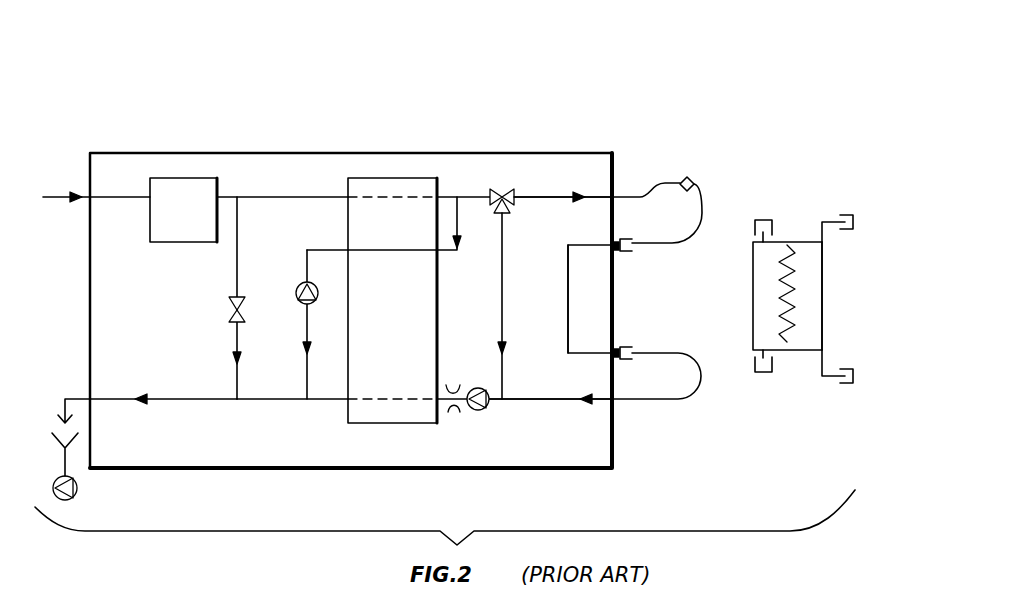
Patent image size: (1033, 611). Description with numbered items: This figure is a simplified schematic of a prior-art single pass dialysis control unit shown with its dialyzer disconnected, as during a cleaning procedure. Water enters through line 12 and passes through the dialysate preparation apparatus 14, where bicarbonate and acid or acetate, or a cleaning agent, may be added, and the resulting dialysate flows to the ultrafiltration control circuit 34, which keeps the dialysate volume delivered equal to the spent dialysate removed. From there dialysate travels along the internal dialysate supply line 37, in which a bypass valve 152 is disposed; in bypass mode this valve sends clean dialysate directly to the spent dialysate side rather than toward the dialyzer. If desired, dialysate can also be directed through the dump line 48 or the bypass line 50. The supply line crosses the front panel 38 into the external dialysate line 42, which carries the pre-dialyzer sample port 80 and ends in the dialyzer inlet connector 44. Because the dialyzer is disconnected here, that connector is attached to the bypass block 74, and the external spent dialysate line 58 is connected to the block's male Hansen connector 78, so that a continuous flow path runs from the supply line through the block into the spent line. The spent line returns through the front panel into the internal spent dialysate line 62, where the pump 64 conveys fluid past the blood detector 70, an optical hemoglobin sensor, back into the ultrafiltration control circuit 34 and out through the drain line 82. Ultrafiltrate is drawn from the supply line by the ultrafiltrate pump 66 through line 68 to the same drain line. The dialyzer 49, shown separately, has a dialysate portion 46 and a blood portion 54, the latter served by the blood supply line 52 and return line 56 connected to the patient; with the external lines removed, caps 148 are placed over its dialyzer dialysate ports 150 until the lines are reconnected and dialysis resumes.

The line 12 is at (114, 197).
The dialysate preparation apparatus 14 is at (155, 242).
The ultrafiltration control circuit 34 is at (410, 310).
The internal dialysate supply line 37 is at (540, 197).
The front panel 38 is at (612, 300).
The external dialysate line 42 is at (655, 181).
The dialyzer inlet connector 44 is at (638, 239).
The dialysate portion 46 is at (753, 287).
The dump line 48 is at (237, 278).
The dialyzer 49 is at (838, 310).
The bypass line 50 is at (502, 303).
The blood supply line 52 is at (830, 222).
The blood portion 54 is at (822, 290).
The return line 56 is at (830, 376).
The external spent dialysate line 58 is at (701, 380).
The internal spent dialysate line 62 is at (530, 399).
The pump 64 is at (484, 410).
The ultrafiltrate pump 66 is at (301, 304).
The line 68 is at (307, 265).
The blood detector 70 is at (453, 414).
The bypass block 74 is at (568, 303).
The male Hansen connector 78 is at (627, 347).
The pre-dialyzer sample port 80 is at (695, 183).
The drain line 82 is at (165, 399).
The caps 148 is at (770, 220).
The dialyzer dialysate ports 150 is at (755, 236).
The bypass valve 152 is at (500, 192).